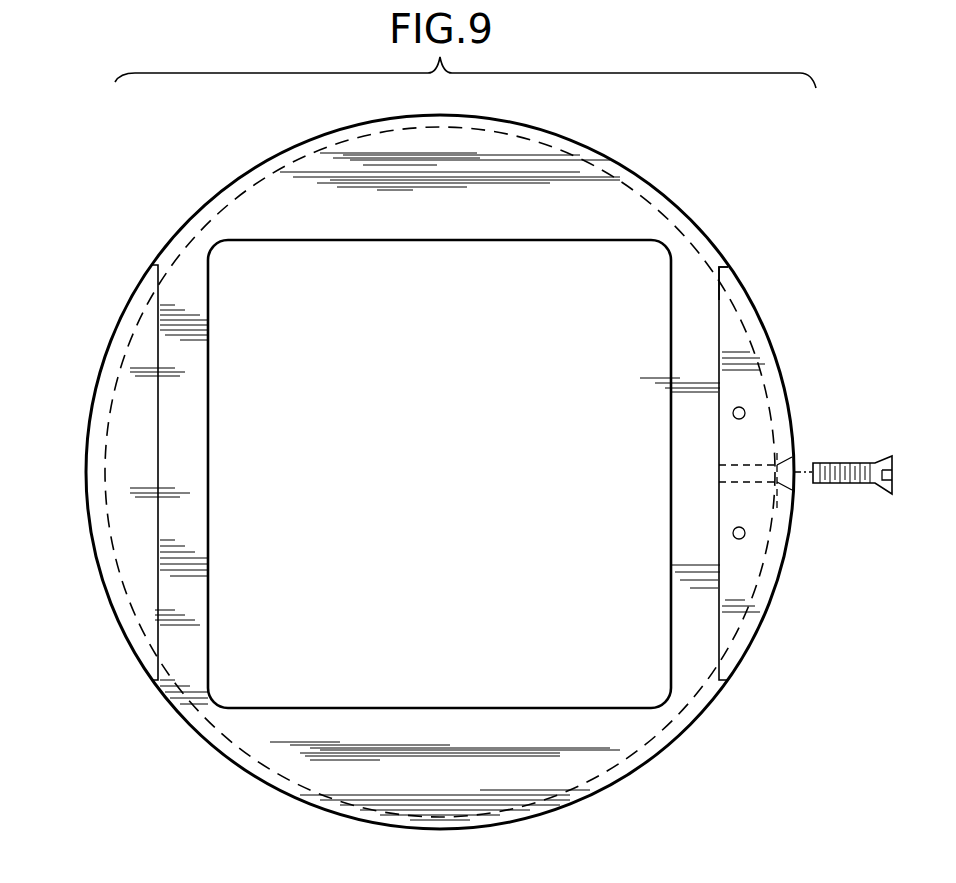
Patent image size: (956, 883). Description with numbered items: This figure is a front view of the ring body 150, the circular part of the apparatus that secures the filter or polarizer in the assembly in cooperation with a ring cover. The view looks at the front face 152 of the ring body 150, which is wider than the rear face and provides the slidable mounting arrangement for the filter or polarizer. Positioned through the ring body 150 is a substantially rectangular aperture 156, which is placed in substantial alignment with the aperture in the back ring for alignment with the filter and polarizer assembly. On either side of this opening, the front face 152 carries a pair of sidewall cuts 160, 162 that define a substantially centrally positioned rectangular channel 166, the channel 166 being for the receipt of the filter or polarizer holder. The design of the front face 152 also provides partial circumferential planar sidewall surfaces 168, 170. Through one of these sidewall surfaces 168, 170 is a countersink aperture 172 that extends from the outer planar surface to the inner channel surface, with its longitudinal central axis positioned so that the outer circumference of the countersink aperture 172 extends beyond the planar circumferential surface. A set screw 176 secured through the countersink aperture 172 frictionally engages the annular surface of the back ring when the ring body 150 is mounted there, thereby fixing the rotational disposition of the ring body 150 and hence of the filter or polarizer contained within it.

The ring body 150 is at (233, 180).
The front face 152 is at (757, 387).
The rectangular aperture 156 is at (664, 692).
The sidewall cut 160 is at (158, 287).
The sidewall cut 162 is at (721, 278).
The channel 166 is at (650, 204).
The partial circumferential planar sidewall surface 168 is at (103, 424).
The partial circumferential planar sidewall surface 170 is at (760, 537).
The countersink aperture 172 is at (759, 475).
The set screw 176 is at (835, 481).